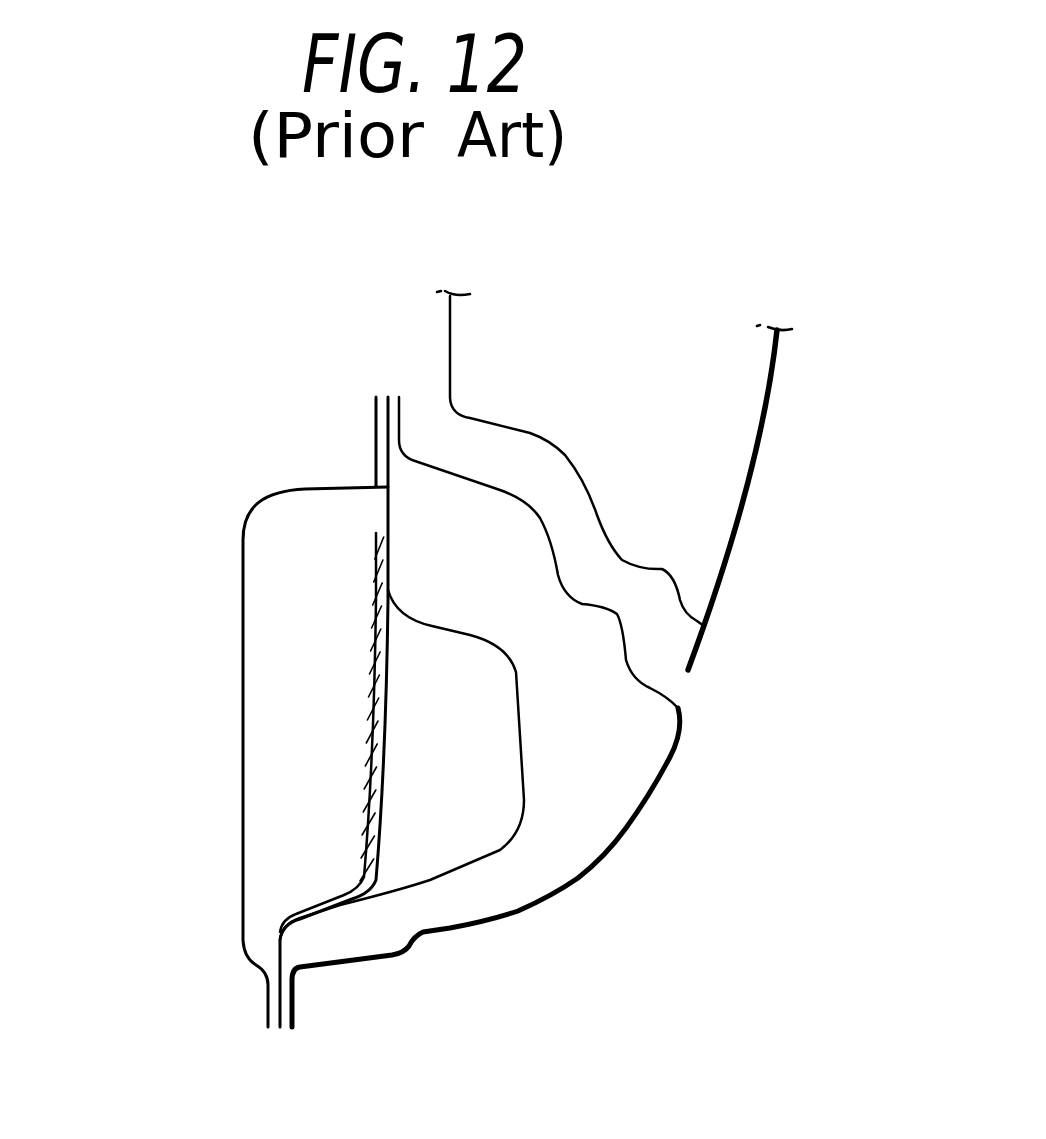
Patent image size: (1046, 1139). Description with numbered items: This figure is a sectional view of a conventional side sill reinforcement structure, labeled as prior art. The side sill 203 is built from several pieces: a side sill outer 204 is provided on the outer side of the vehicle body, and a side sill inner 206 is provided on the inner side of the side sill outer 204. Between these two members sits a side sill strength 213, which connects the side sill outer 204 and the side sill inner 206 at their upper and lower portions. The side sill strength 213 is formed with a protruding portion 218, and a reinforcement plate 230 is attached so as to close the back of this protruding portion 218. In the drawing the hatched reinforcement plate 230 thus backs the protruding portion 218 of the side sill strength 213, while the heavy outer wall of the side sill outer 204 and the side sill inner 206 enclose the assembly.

The side sill 203 is at (826, 581).
The side sill outer 204 is at (706, 780).
The side sill inner 206 is at (204, 541).
The side sill strength 213 is at (538, 862).
The protruding portion 218 is at (528, 801).
The reinforcement plate 230 is at (375, 744).